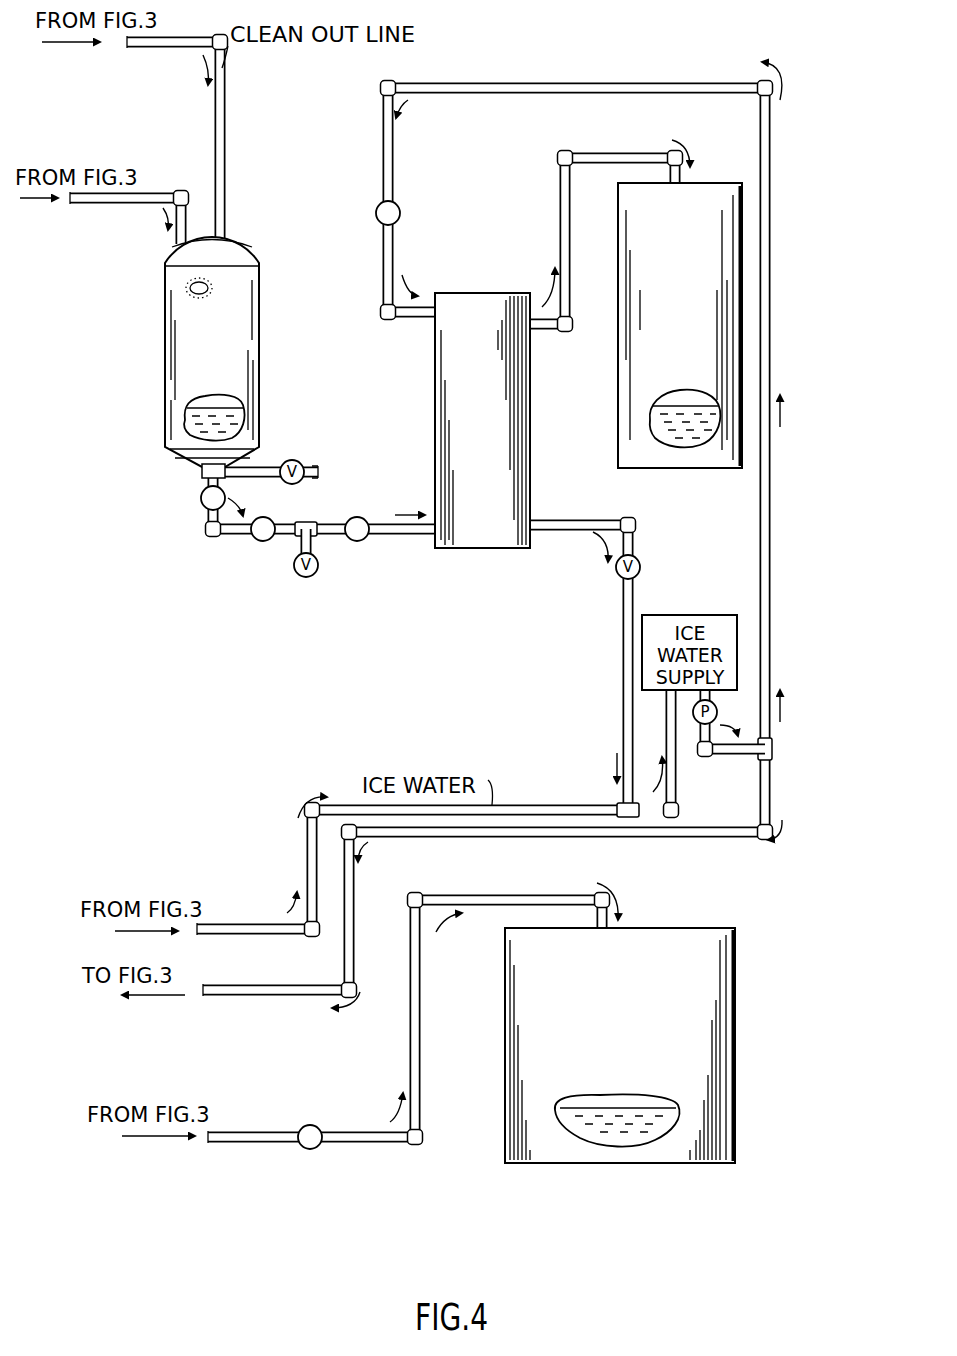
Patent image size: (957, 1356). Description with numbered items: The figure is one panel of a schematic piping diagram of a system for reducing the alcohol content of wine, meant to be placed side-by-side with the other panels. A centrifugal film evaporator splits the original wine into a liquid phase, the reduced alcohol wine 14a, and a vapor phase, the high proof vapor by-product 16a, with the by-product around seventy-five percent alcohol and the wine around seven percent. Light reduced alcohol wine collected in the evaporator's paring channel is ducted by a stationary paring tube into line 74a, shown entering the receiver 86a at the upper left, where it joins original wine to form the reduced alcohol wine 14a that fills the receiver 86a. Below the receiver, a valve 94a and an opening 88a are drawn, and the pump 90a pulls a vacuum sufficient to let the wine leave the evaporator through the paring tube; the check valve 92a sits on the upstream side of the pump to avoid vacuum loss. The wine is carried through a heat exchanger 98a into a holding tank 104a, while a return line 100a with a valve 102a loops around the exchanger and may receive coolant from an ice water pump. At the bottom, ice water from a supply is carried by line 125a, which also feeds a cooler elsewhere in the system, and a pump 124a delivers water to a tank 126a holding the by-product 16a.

The reduced alcohol wine 14a is at (197, 413).
The high proof vapor by-product 16a is at (630, 1133).
The paring tube line 74a is at (113, 200).
The receiver 86a is at (230, 368).
The vent opening 88a is at (188, 286).
The pump 90a is at (266, 542).
The check valve 92a is at (357, 493).
The valve 94a is at (202, 495).
The heat exchanger 98a is at (502, 411).
The coolant line 100a is at (470, 92).
The valve 102a is at (400, 214).
The holding tank 104a is at (708, 327).
The pump 124a is at (307, 1149).
The ice water line 125a is at (623, 838).
The ice water tank 126a is at (654, 1052).